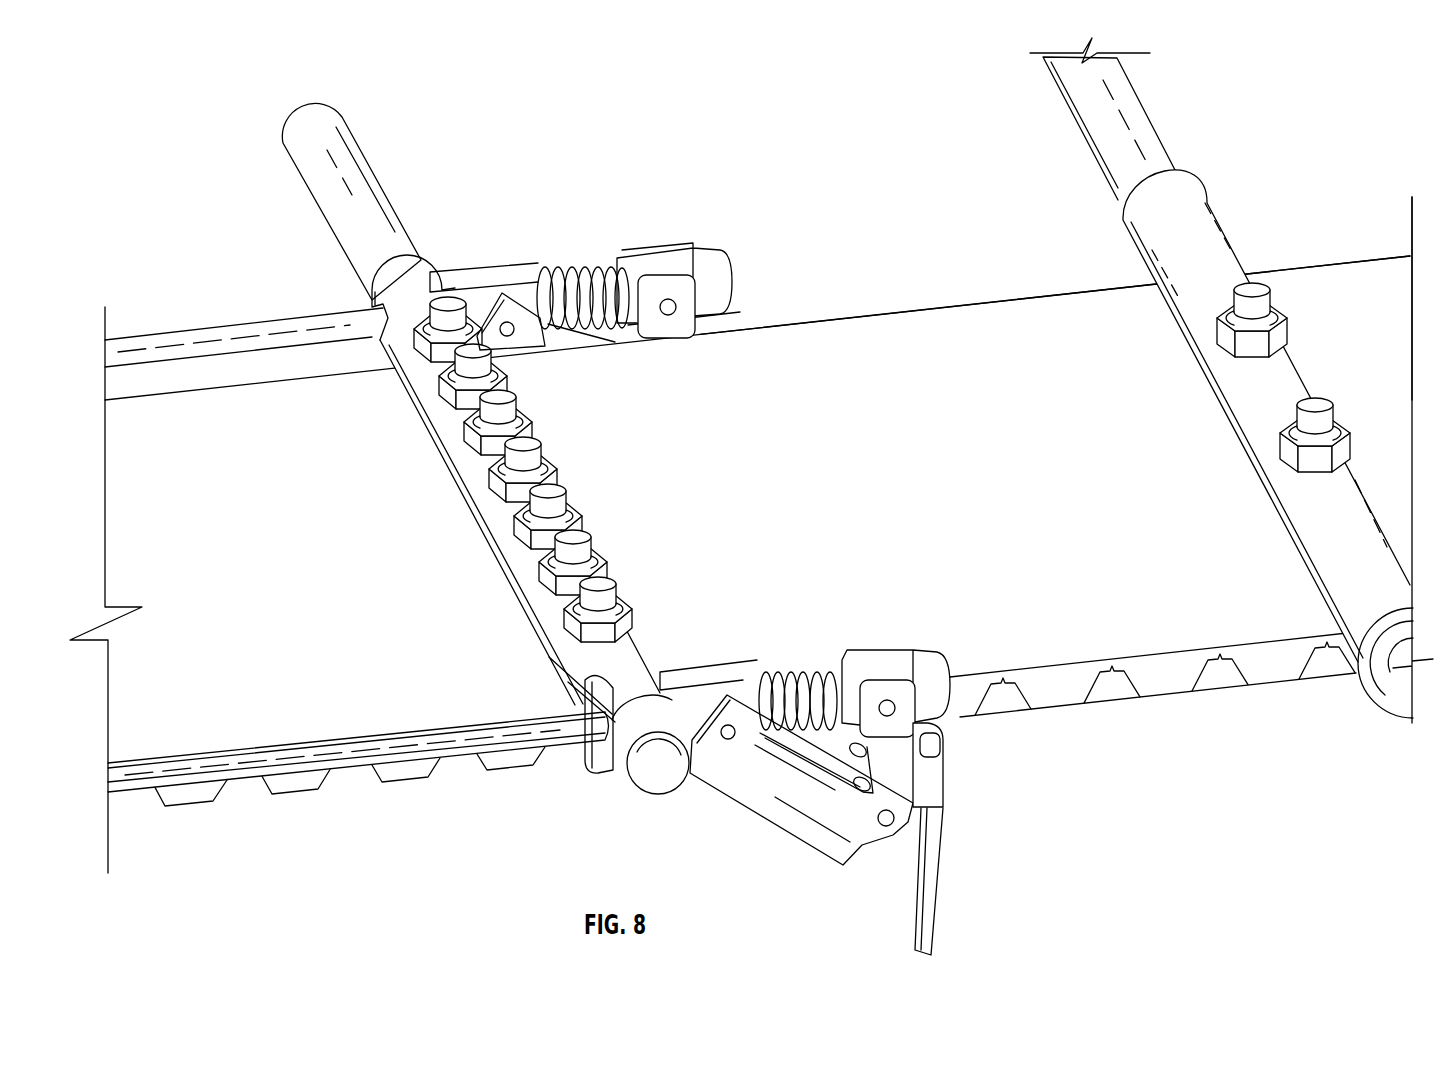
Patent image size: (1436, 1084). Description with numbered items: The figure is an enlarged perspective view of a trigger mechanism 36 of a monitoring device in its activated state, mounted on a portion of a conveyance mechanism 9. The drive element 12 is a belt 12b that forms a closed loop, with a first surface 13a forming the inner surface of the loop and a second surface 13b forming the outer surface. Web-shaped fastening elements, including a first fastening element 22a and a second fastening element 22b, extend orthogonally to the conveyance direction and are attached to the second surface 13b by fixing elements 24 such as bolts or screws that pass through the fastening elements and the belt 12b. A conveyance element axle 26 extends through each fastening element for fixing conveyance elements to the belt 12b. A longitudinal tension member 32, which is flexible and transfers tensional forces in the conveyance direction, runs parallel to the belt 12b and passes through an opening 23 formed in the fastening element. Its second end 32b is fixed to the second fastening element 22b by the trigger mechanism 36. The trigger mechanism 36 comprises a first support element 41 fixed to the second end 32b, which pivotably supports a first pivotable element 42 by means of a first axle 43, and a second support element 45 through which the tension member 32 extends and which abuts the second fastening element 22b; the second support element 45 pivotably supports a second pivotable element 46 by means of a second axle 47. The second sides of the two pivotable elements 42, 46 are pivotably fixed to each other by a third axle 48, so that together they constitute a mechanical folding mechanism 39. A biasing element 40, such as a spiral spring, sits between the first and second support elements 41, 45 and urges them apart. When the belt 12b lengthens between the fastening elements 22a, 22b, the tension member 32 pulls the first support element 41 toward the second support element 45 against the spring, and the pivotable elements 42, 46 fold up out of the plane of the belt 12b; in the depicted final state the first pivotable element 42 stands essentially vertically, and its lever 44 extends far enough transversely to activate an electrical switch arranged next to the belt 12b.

The conveyance mechanism 9 is at (1252, 866).
The drive element 12 is at (972, 266).
The belt 12b is at (1413, 460).
The first surface 13a is at (271, 830).
The second surface 13b is at (900, 323).
The first fastening element 22a is at (1317, 560).
The second fastening element 22b is at (568, 666).
The opening 23 is at (595, 768).
The fixing element 24 is at (520, 408).
The conveyance element axle 26 is at (378, 188).
The longitudinal tension member 32 is at (249, 332).
The second end of the longitudinal tension member 32b is at (742, 236).
The trigger mechanism 36 is at (695, 551).
The mechanism 39 is at (800, 866).
The biasing element 40 is at (565, 255).
The first support element 41 is at (683, 259).
The first pivotable element 42 is at (685, 294).
The first axle 43 is at (668, 315).
The lever 44 is at (933, 886).
The second support element 45 is at (457, 276).
The second pivotable element 46 is at (480, 258).
The second axle 47 is at (508, 322).
The third axle 48 is at (890, 830).